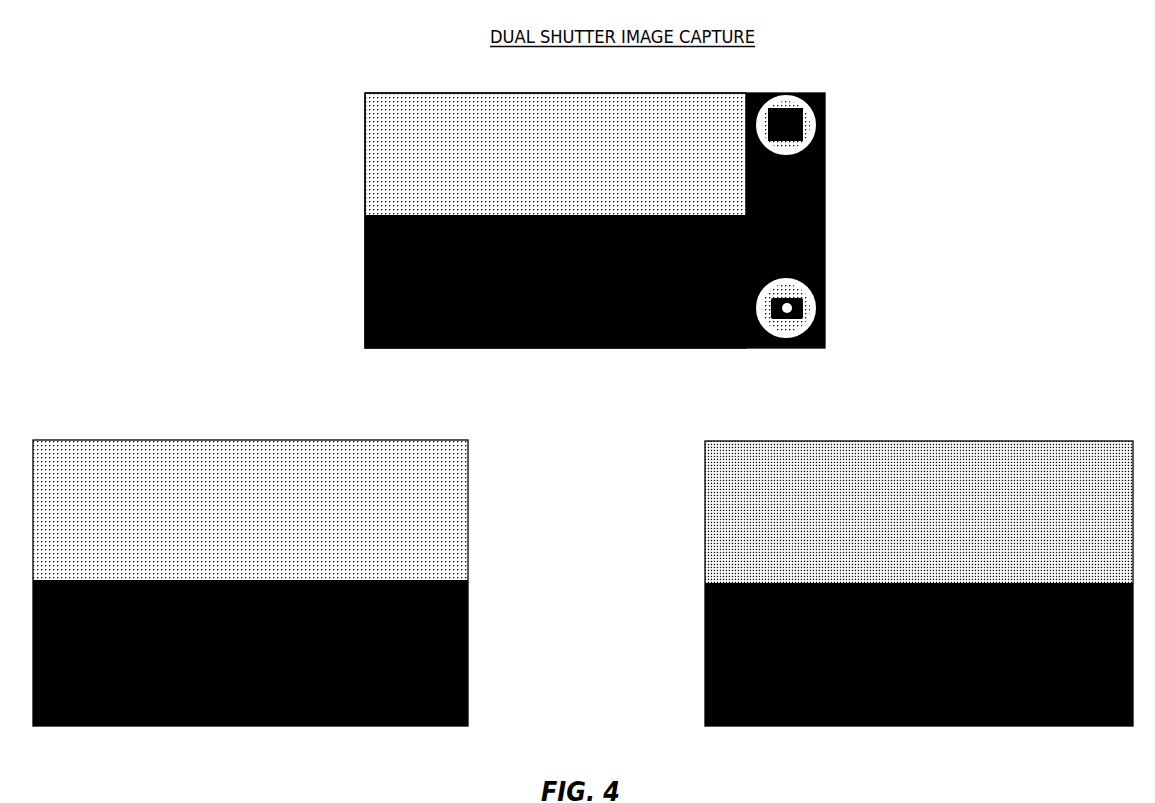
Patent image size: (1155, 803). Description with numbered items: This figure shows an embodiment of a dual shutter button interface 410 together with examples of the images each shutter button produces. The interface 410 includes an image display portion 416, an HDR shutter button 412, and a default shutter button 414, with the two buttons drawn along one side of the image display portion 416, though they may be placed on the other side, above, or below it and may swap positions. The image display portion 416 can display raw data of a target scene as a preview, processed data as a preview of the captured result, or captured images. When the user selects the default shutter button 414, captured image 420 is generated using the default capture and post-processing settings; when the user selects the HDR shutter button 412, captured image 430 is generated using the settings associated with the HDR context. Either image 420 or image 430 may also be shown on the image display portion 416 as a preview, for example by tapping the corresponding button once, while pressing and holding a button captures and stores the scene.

The interface 410 is at (641, 205).
The HDR shutter button 412 is at (797, 118).
The default shutter button 414 is at (798, 303).
The image display portion 416 is at (405, 93).
The captured image 420 is at (418, 432).
The captured image 430 is at (698, 433).